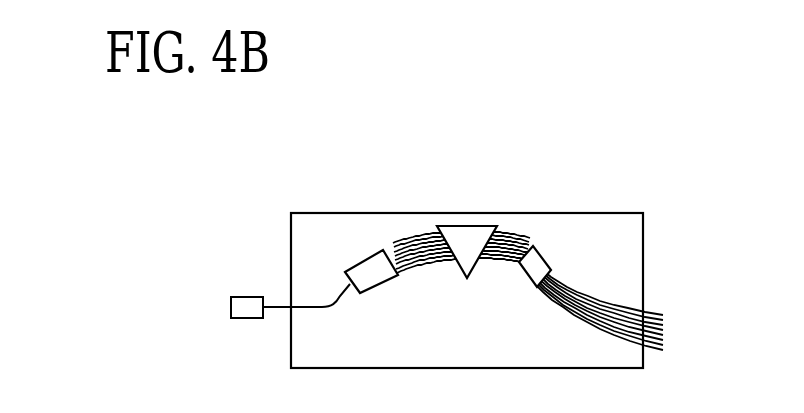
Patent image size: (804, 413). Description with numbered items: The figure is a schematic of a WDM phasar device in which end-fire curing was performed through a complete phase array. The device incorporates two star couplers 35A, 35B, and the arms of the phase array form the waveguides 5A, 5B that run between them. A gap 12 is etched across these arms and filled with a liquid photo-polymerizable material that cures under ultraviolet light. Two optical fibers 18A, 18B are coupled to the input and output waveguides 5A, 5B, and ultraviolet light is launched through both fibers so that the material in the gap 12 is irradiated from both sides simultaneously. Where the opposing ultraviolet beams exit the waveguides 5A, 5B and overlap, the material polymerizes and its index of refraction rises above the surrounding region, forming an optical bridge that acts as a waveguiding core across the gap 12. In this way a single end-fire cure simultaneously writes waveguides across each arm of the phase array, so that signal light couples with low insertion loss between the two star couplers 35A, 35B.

The gap 12 is at (466, 226).
The waveguide 5A is at (402, 243).
The waveguide 5B is at (510, 237).
The star coupler 35A is at (358, 256).
The star coupler 35B is at (538, 249).
The optical fiber 18A is at (247, 318).
The optical fiber 18B is at (655, 313).